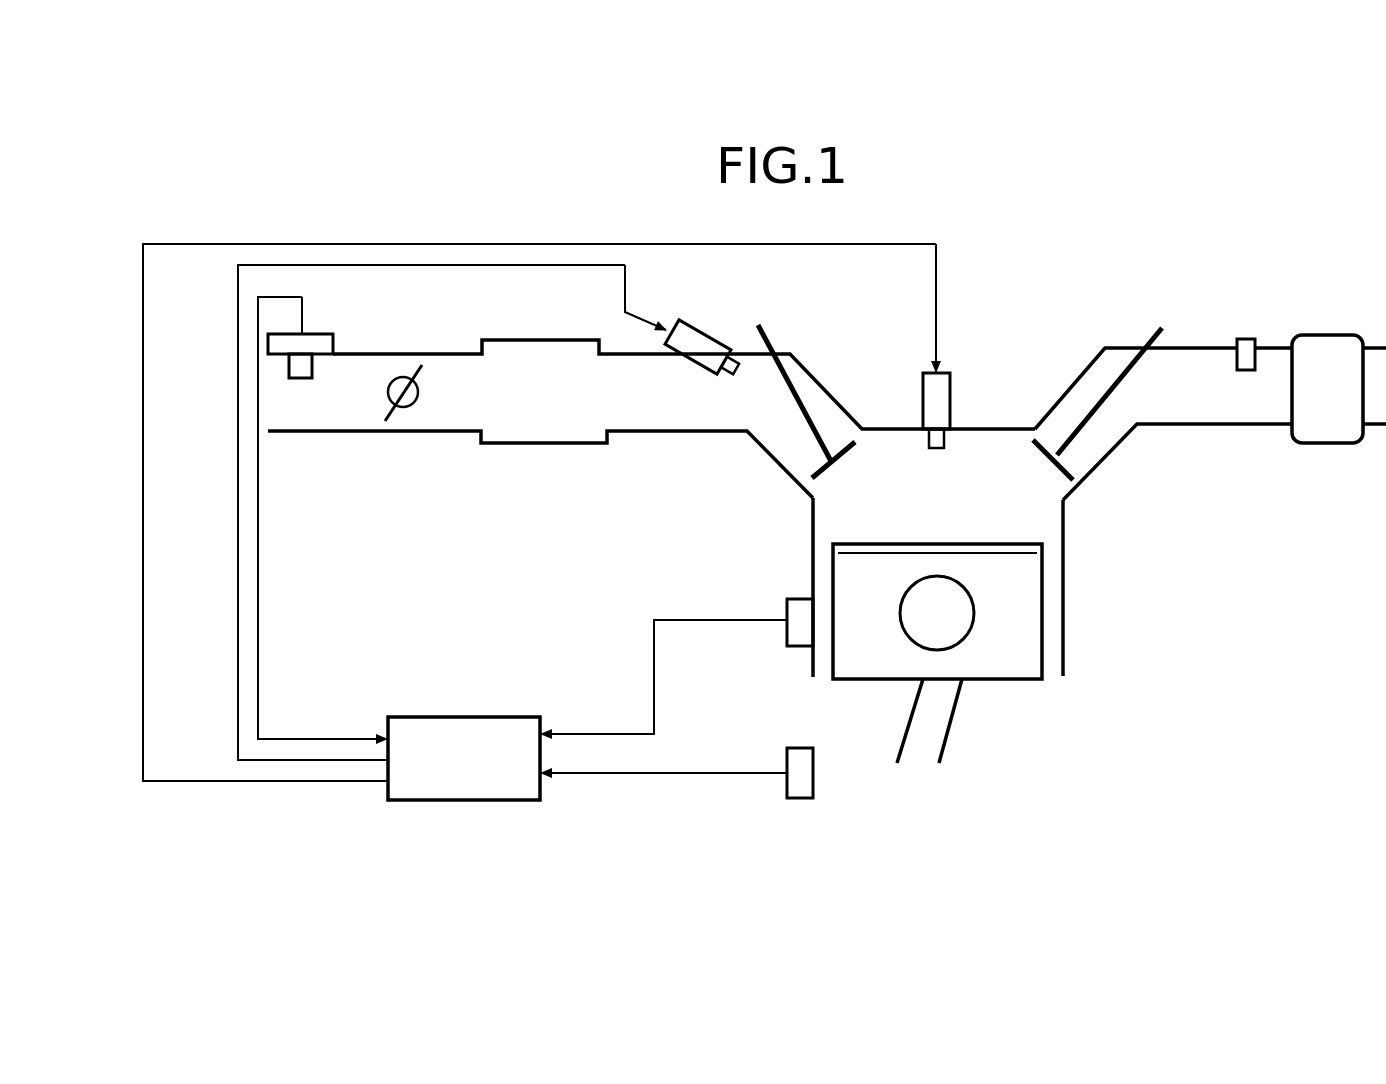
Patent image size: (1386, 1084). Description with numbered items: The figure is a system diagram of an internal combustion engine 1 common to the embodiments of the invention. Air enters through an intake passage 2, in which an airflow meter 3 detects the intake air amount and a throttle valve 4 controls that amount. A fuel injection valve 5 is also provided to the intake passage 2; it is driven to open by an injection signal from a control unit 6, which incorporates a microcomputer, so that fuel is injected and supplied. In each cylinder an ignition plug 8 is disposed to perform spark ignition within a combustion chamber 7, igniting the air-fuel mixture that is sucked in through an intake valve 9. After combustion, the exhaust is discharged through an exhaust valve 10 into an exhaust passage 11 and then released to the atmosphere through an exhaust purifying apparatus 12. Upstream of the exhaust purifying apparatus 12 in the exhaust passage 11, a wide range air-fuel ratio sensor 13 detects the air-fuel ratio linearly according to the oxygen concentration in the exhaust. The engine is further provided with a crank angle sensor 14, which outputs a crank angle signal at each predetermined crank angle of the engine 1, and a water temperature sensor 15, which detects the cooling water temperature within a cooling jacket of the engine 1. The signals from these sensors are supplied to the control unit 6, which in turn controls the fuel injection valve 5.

The engine 1 is at (1006, 630).
The intake passage 2 is at (548, 410).
The airflow meter 3 is at (303, 378).
The throttle valve 4 is at (407, 408).
The fuel injection valve 5 is at (698, 350).
The control unit 6 is at (465, 717).
The combustion chamber 7 is at (942, 520).
The ignition plug 8 is at (940, 400).
The intake valve 9 is at (798, 380).
The exhaust valve 10 is at (1117, 378).
The exhaust passage 11 is at (1198, 368).
The exhaust purifying apparatus 12 is at (1327, 355).
The wide range air-fuel ratio sensor 13 is at (1248, 370).
The crank angle sensor 14 is at (800, 798).
The water temperature sensor 15 is at (795, 598).